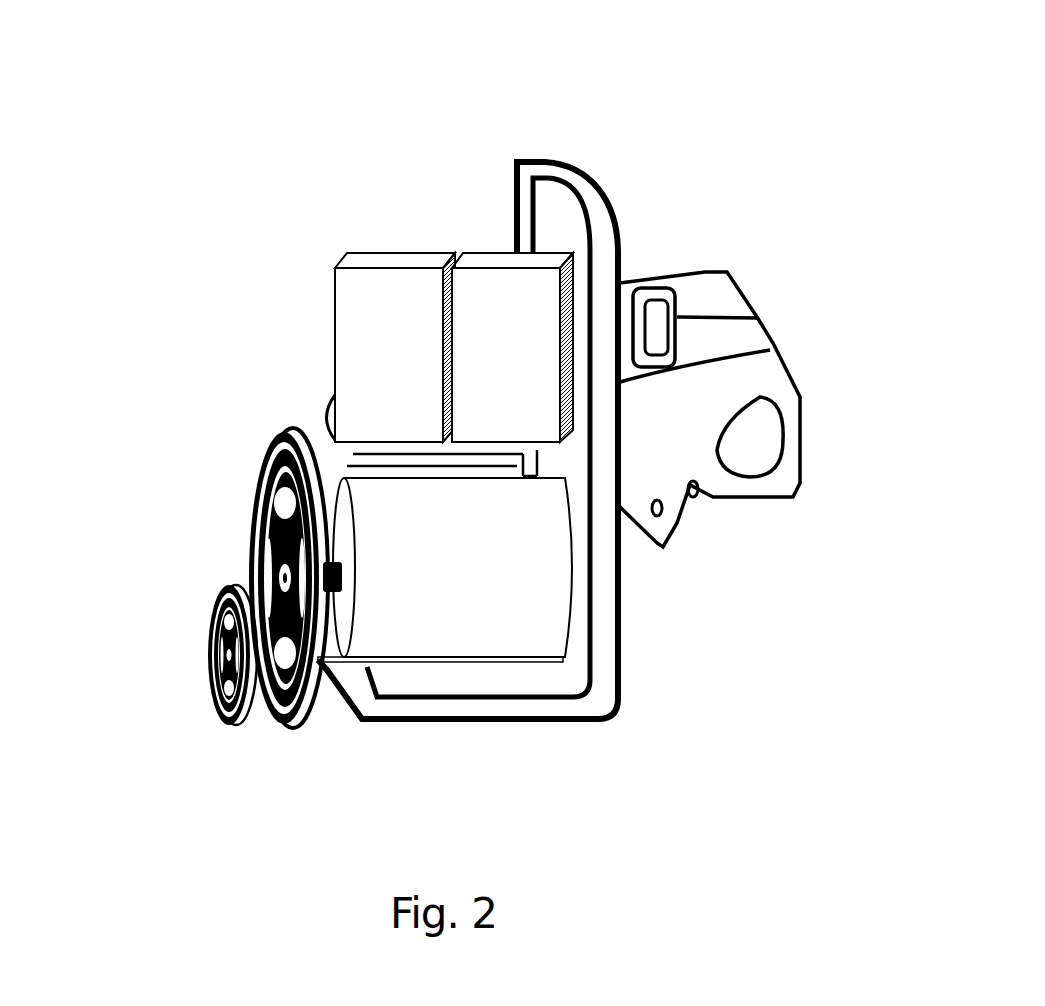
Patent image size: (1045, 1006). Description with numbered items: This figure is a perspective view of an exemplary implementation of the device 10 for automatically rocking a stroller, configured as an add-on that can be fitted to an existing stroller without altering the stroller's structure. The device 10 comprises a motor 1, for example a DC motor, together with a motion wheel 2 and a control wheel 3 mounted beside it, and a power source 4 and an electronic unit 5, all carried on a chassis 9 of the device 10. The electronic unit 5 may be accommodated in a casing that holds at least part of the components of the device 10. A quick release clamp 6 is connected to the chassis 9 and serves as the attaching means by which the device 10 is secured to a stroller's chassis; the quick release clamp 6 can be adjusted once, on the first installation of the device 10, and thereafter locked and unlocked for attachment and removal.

The device 10 is at (681, 68).
The chassis 9 is at (585, 210).
The power source 4 is at (333, 268).
The electronic unit 5 is at (477, 252).
The motor 1 is at (517, 648).
The motion wheel 2 is at (263, 465).
The control wheel 3 is at (213, 667).
The quick release clamp 6 is at (715, 497).